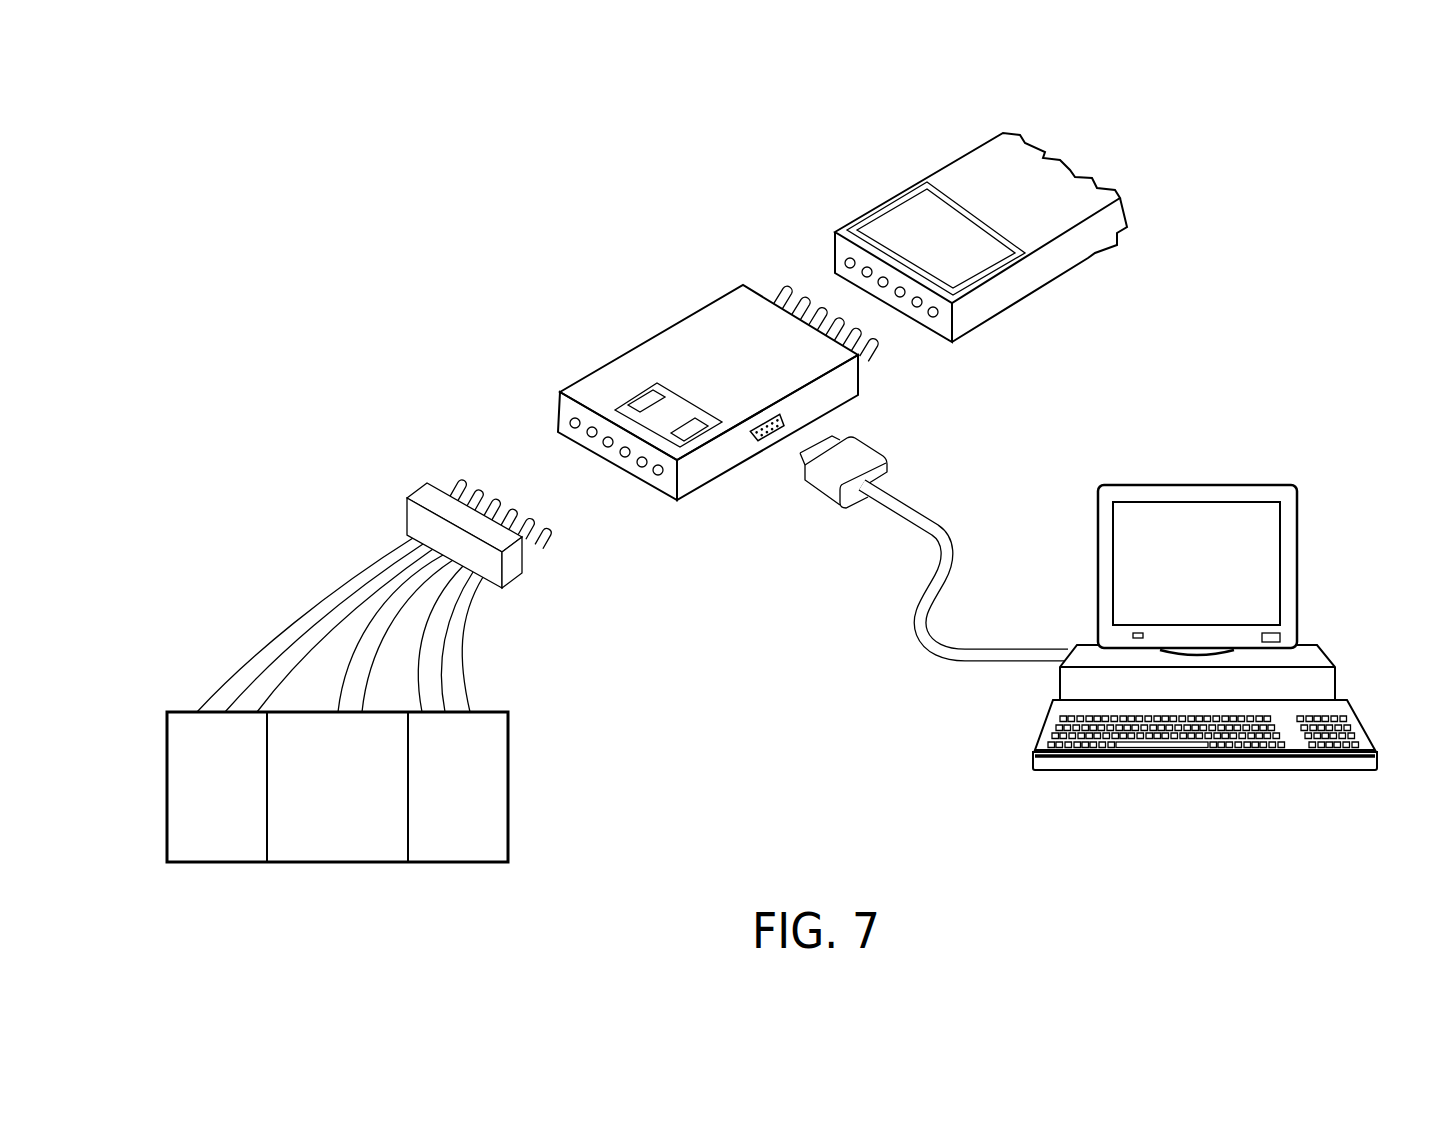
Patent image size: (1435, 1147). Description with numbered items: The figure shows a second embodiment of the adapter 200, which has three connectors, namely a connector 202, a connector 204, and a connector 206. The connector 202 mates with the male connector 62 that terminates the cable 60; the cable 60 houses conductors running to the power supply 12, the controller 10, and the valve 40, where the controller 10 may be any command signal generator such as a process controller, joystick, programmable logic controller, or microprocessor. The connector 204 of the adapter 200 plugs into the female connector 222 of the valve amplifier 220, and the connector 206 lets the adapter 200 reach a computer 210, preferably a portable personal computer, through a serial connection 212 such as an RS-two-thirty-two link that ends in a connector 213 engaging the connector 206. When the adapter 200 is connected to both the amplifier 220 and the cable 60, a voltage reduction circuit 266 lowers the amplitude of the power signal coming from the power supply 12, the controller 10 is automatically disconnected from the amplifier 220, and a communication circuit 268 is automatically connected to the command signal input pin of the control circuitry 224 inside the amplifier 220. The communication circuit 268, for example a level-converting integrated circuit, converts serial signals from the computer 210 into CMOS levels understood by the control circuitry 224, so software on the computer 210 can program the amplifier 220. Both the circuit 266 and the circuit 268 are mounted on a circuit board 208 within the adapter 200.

The controller 10 is at (358, 853).
The power supply 12 is at (212, 853).
The valve 40 is at (508, 780).
The cable 60 is at (250, 632).
The male connector 62 is at (497, 580).
The adapter 200 is at (688, 316).
The connector 202 is at (577, 442).
The connector 204 is at (873, 333).
The connector 206 is at (765, 440).
The circuit board 208 is at (678, 402).
The voltage reduction circuit 266 is at (645, 398).
The communication circuit 268 is at (697, 422).
The serial connection 212 is at (955, 537).
The connector 213 is at (887, 462).
The computer 210 is at (1325, 658).
The valve amplifier 220 is at (1090, 253).
The female connector 222 is at (873, 222).
The control circuitry 224 is at (927, 186).